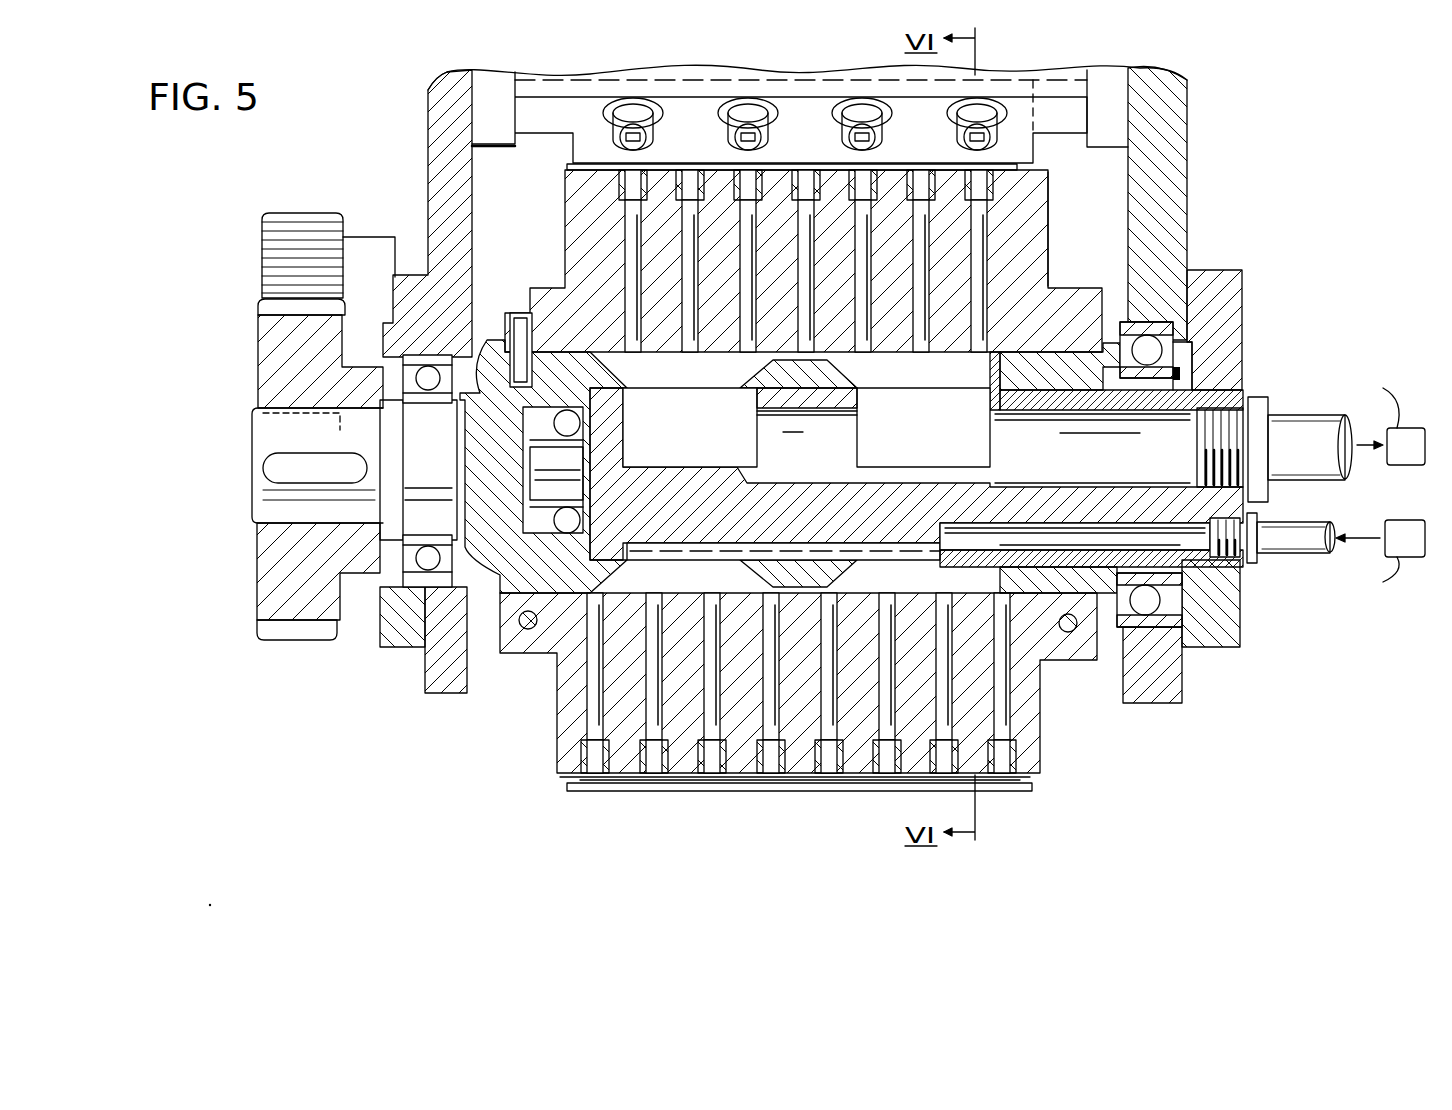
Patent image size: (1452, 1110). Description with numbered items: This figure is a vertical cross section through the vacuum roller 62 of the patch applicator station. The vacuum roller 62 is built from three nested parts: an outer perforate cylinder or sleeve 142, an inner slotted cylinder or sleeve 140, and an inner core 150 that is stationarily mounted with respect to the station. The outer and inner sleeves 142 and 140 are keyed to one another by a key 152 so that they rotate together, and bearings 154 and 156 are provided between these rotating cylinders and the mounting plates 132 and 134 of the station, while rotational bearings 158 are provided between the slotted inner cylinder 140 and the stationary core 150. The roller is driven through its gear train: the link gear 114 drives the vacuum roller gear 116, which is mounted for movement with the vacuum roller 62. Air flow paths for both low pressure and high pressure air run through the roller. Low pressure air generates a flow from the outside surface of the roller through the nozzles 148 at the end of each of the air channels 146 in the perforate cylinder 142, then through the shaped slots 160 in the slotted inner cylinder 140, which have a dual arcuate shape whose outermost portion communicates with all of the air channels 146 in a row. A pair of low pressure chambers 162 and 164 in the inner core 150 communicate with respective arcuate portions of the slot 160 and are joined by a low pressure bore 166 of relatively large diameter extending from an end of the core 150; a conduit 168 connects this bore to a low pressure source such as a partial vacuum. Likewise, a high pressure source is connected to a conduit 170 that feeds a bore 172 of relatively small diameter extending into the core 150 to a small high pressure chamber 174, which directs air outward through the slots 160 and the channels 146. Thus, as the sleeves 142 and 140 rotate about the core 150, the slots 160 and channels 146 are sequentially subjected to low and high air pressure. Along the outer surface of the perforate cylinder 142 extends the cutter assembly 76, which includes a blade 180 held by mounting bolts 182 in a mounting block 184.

The vacuum roller 62 is at (1050, 196).
The cutter assembly 76 is at (577, 163).
The link gear 114 is at (272, 240).
The vacuum roller gear 116 is at (258, 568).
The mounting plate 132 is at (437, 157).
The mounting plate 134 is at (1182, 176).
The inner slotted cylinder 140 is at (1062, 348).
The outer perforate cylinder 142 is at (1048, 230).
The air channels 146 is at (630, 216).
The nozzles 148 is at (620, 188).
The inner core 150 is at (1203, 383).
The key 152 is at (521, 340).
The bearing 154 is at (420, 567).
The bearing 156 is at (1160, 625).
The rotational bearings 158 is at (563, 522).
The shaped slots 160 is at (613, 363).
The low pressure chamber 162 is at (704, 432).
The low pressure chamber 164 is at (924, 432).
The low pressure bore 166 is at (1195, 392).
The conduit 168 is at (1302, 423).
The conduit 170 is at (1285, 548).
The bore 172 is at (1195, 545).
The high pressure chamber 174 is at (798, 548).
The blade 180 is at (1022, 148).
The mounting bolts 182 is at (748, 127).
The mounting block 184 is at (1072, 120).